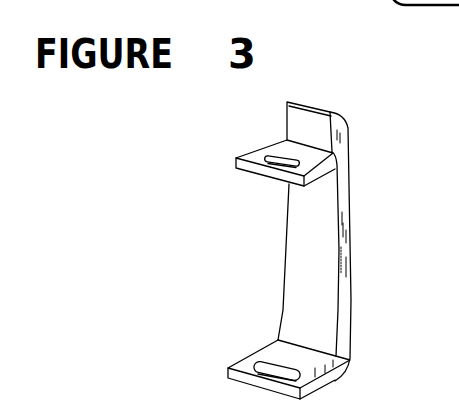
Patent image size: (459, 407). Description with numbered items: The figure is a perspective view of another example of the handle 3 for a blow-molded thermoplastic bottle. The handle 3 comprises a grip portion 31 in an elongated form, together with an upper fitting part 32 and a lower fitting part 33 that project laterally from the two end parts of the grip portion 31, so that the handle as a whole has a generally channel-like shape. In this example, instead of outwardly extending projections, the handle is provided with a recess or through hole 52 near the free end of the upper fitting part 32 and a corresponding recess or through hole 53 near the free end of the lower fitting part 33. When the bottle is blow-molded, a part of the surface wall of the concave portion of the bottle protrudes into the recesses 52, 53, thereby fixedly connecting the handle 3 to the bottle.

The handle 3 is at (312, 250).
The grip portion 31 is at (350, 244).
The upper fitting part 32 is at (280, 151).
The lower fitting part 33 is at (315, 359).
The recess or through hole 52 is at (273, 162).
The recess or through hole 53 is at (268, 362).